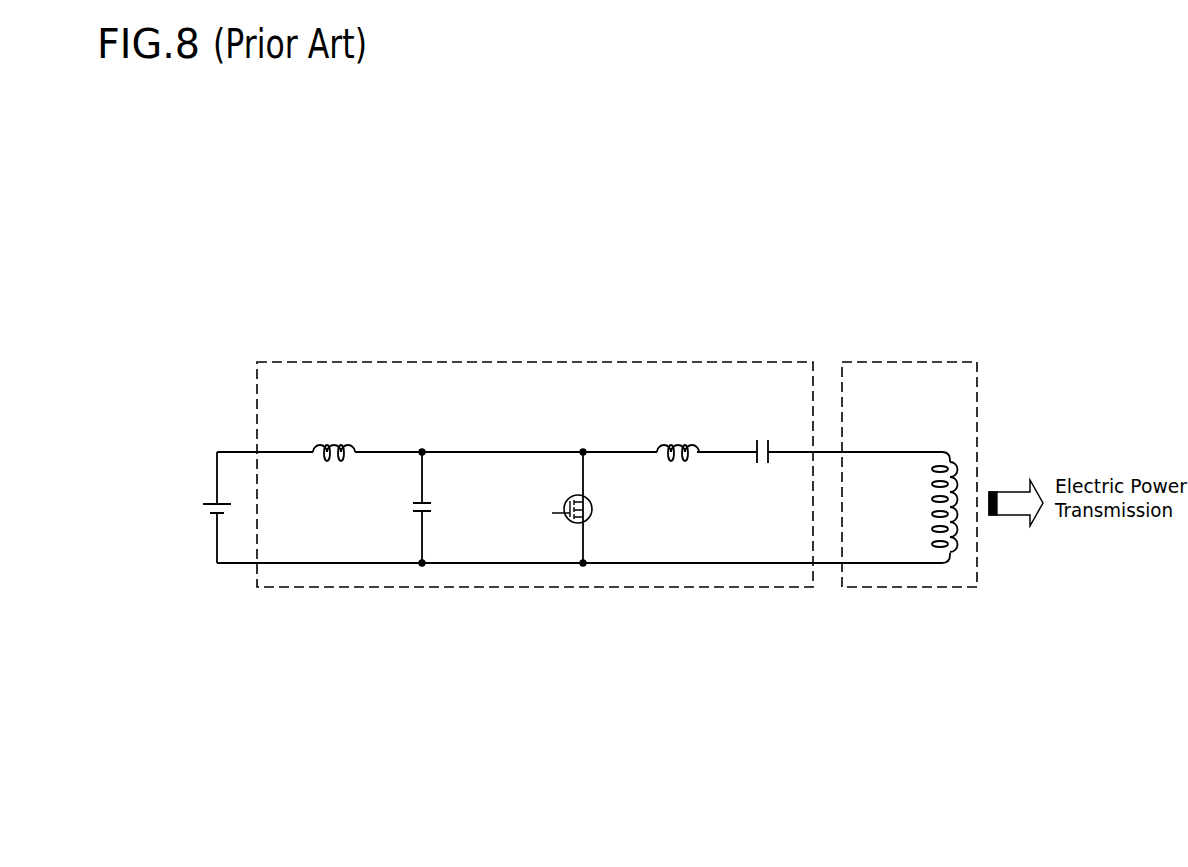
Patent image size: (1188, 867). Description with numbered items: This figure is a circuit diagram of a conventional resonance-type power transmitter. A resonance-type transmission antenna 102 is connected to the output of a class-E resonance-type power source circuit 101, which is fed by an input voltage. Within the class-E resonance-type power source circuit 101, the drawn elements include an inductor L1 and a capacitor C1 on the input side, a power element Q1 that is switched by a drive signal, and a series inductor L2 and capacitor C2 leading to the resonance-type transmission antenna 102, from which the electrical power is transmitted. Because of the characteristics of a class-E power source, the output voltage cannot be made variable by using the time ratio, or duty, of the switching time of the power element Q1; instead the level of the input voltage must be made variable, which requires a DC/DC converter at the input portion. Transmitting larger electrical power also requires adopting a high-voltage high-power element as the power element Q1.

The class-E resonance-type power source circuit 101 is at (283, 362).
The resonance-type transmission antenna 102 is at (867, 362).
The inductor L1 is at (334, 437).
The capacitor C1 is at (437, 507).
The power element Q1 is at (561, 498).
The resonance inductor L2 is at (678, 435).
The resonance capacitor C2 is at (761, 437).